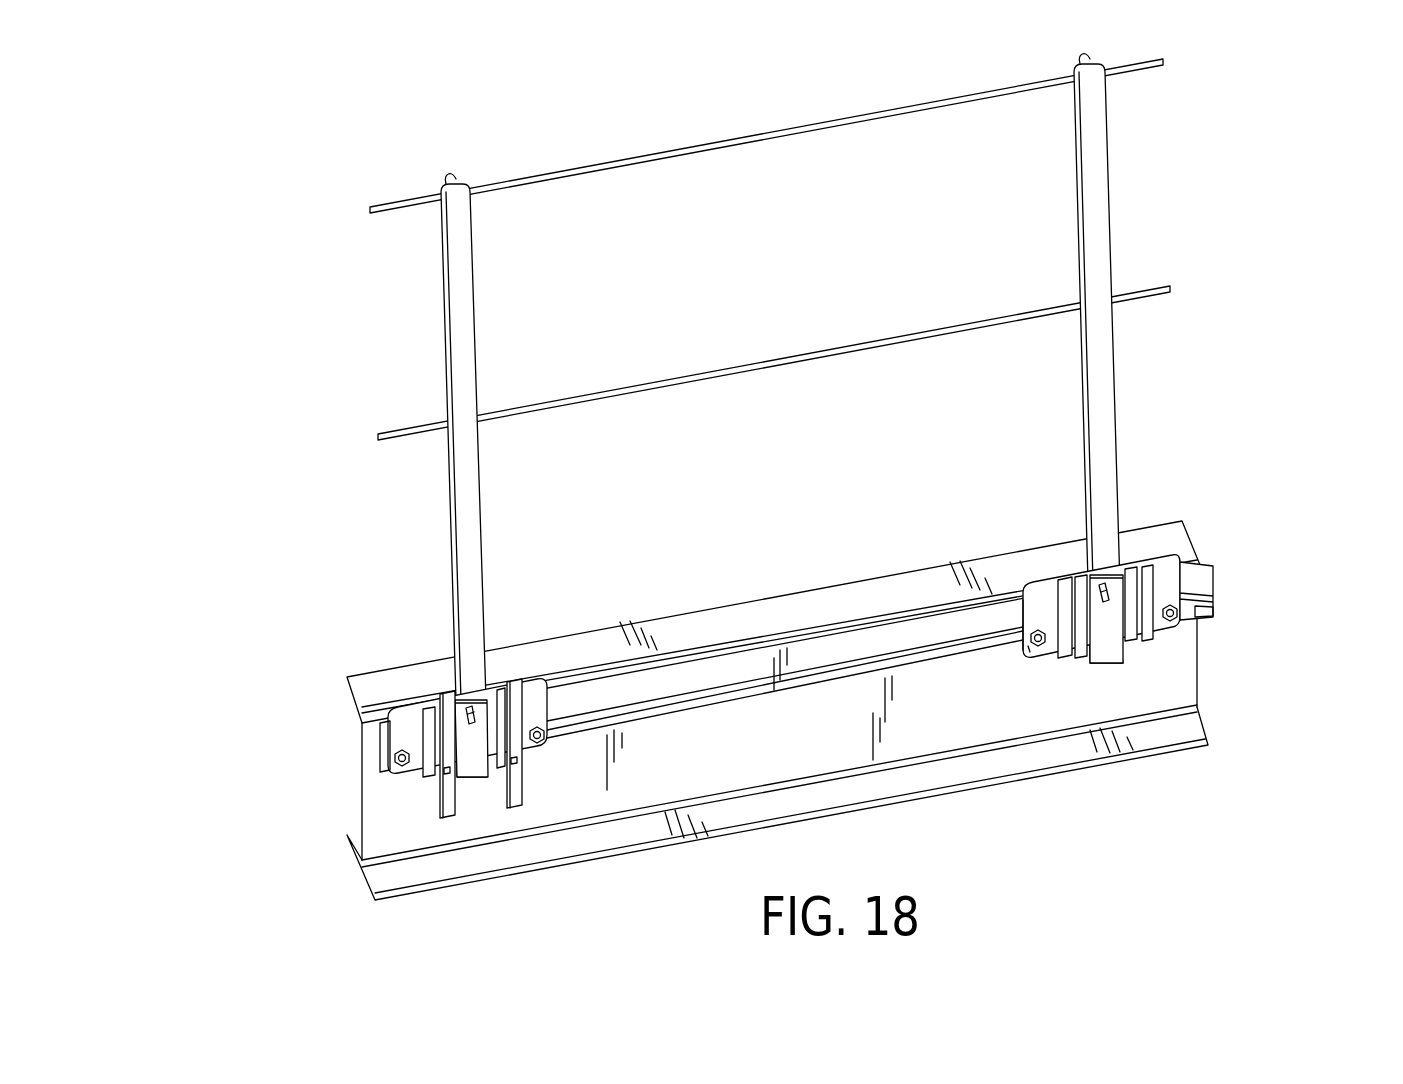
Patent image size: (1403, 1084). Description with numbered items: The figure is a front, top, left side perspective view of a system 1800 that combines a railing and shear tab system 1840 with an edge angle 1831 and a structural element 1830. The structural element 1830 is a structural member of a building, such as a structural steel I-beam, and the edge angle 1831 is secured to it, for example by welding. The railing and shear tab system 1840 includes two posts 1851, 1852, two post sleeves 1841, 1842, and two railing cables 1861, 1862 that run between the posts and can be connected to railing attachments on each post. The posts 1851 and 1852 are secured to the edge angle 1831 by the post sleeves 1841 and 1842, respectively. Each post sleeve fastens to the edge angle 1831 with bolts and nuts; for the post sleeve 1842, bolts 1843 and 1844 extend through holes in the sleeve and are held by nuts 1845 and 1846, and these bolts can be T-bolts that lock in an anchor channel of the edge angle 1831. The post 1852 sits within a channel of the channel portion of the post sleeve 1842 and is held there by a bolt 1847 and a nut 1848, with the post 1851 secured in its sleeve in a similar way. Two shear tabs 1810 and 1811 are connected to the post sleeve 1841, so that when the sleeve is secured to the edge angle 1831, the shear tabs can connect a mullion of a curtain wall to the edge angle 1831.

The system 1800 is at (760, 101).
The railing and shear tab system 1840 is at (386, 178).
The structural element 1830 is at (1187, 673).
The edge angle 1831 is at (1209, 578).
The post sleeve 1841 is at (530, 693).
The post sleeve 1842 is at (1175, 573).
The bolt 1843 is at (1040, 647).
The bolt 1844 is at (1172, 622).
The nut 1845 is at (1022, 651).
The nut 1846 is at (1214, 613).
The bolt 1847 is at (1137, 577).
The nut 1848 is at (1100, 587).
The post 1851 is at (462, 312).
The post 1852 is at (1097, 183).
The railing cable 1861 is at (785, 366).
The railing cable 1862 is at (752, 139).
The shear tab 1810 is at (450, 818).
The shear tab 1811 is at (527, 809).